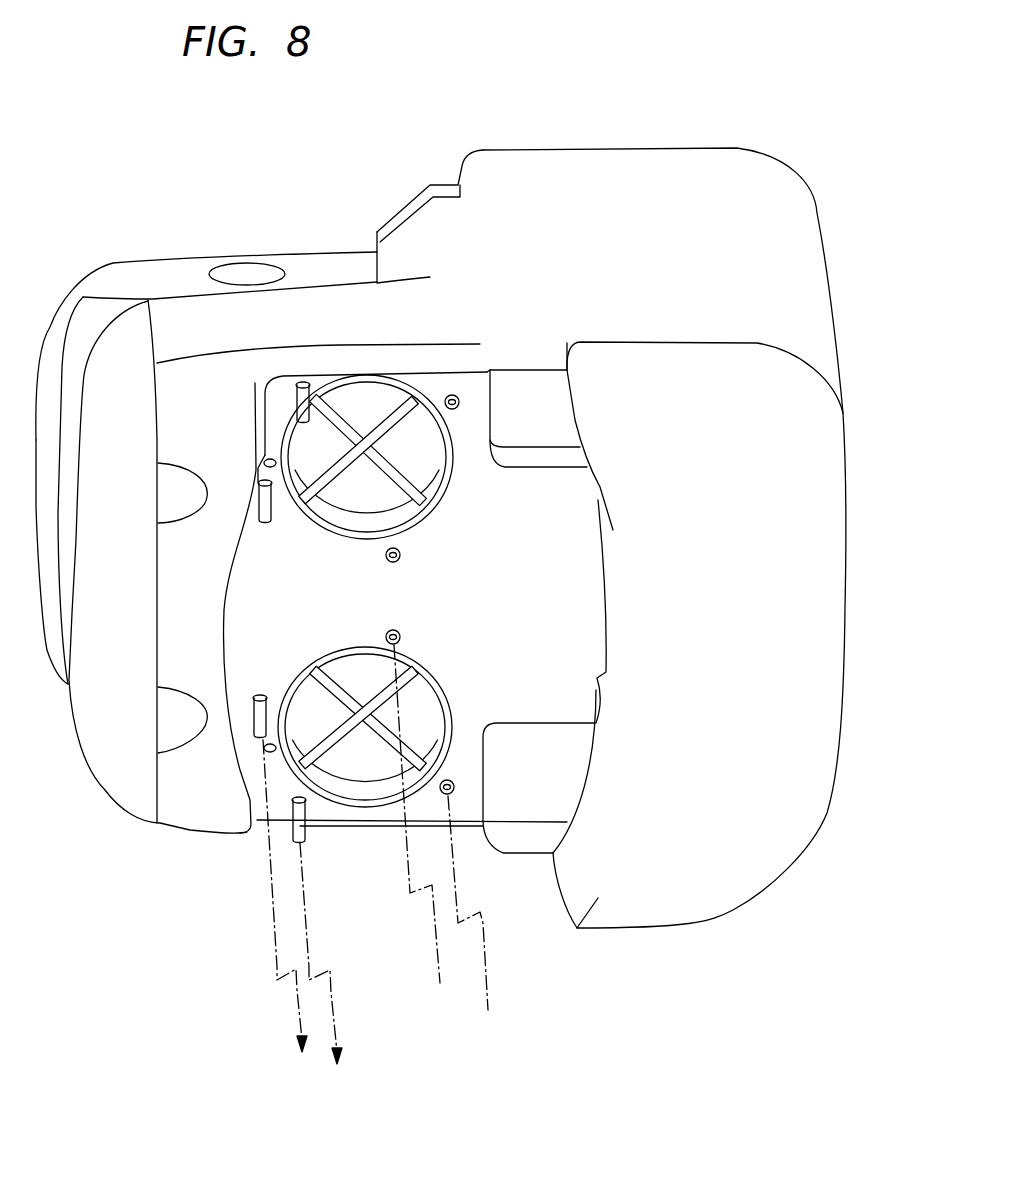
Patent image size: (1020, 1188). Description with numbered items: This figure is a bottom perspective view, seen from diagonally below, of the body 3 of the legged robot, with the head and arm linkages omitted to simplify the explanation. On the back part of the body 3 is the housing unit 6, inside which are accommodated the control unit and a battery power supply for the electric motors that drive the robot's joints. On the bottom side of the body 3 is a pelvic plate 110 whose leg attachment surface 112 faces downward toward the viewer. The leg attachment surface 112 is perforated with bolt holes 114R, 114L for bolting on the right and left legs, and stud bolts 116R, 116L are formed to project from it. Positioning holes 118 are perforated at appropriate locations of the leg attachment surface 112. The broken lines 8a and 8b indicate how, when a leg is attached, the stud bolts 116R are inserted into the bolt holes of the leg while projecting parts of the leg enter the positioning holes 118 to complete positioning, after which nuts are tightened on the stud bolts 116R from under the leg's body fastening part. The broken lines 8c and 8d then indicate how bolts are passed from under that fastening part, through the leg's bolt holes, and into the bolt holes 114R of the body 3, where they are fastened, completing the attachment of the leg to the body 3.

The body 3 is at (122, 277).
The housing unit 6 is at (750, 193).
The pelvic plate 110 is at (183, 653).
The leg attachment surface 112 is at (247, 626).
The bolt hole 114L is at (457, 398).
The bolt hole 114R is at (401, 636).
The stud bolt 116L is at (297, 393).
The stud bolt 116R is at (263, 698).
The positioning hole 118 is at (264, 462).
The broken line 8a is at (296, 988).
The broken line 8b is at (337, 1005).
The broken line 8c is at (436, 963).
The broken line 8d is at (488, 983).